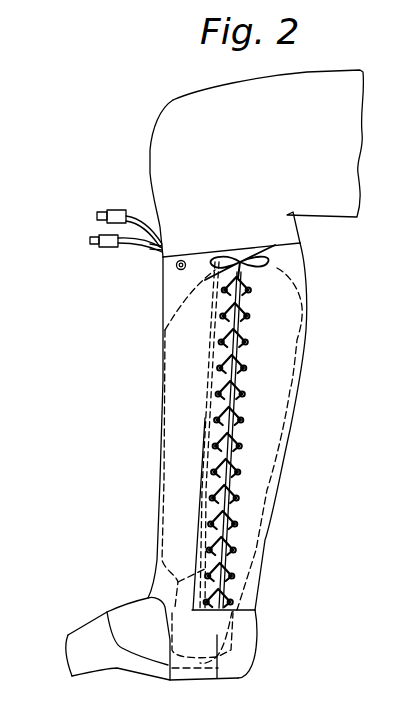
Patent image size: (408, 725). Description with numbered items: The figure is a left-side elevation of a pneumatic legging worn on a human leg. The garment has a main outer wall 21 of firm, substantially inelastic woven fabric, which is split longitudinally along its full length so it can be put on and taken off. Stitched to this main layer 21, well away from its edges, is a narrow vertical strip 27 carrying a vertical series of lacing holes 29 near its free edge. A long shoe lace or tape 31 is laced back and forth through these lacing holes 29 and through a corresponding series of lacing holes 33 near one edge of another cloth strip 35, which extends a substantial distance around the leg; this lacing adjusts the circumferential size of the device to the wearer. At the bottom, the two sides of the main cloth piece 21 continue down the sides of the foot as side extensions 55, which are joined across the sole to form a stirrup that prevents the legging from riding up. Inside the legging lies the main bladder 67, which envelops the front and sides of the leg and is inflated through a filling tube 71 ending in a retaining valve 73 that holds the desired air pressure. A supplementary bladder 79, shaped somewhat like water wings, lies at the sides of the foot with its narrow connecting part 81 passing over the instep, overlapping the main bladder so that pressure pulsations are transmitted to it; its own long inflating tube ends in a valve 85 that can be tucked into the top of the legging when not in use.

The main outer wall 21 is at (160, 397).
The narrow vertical strip 27 is at (223, 355).
The lacing holes 29 is at (227, 397).
The lacing string 31 is at (242, 372).
The lacing holes 33 is at (246, 327).
The cloth strip 35 is at (272, 420).
The side extensions 55 is at (167, 650).
The main bladder 67 is at (163, 437).
The filling tube 71 is at (145, 247).
The valve 73 is at (103, 244).
The supplementary bladder 79 is at (148, 658).
The narrow connecting part 81 is at (142, 604).
The valve 85 is at (118, 210).